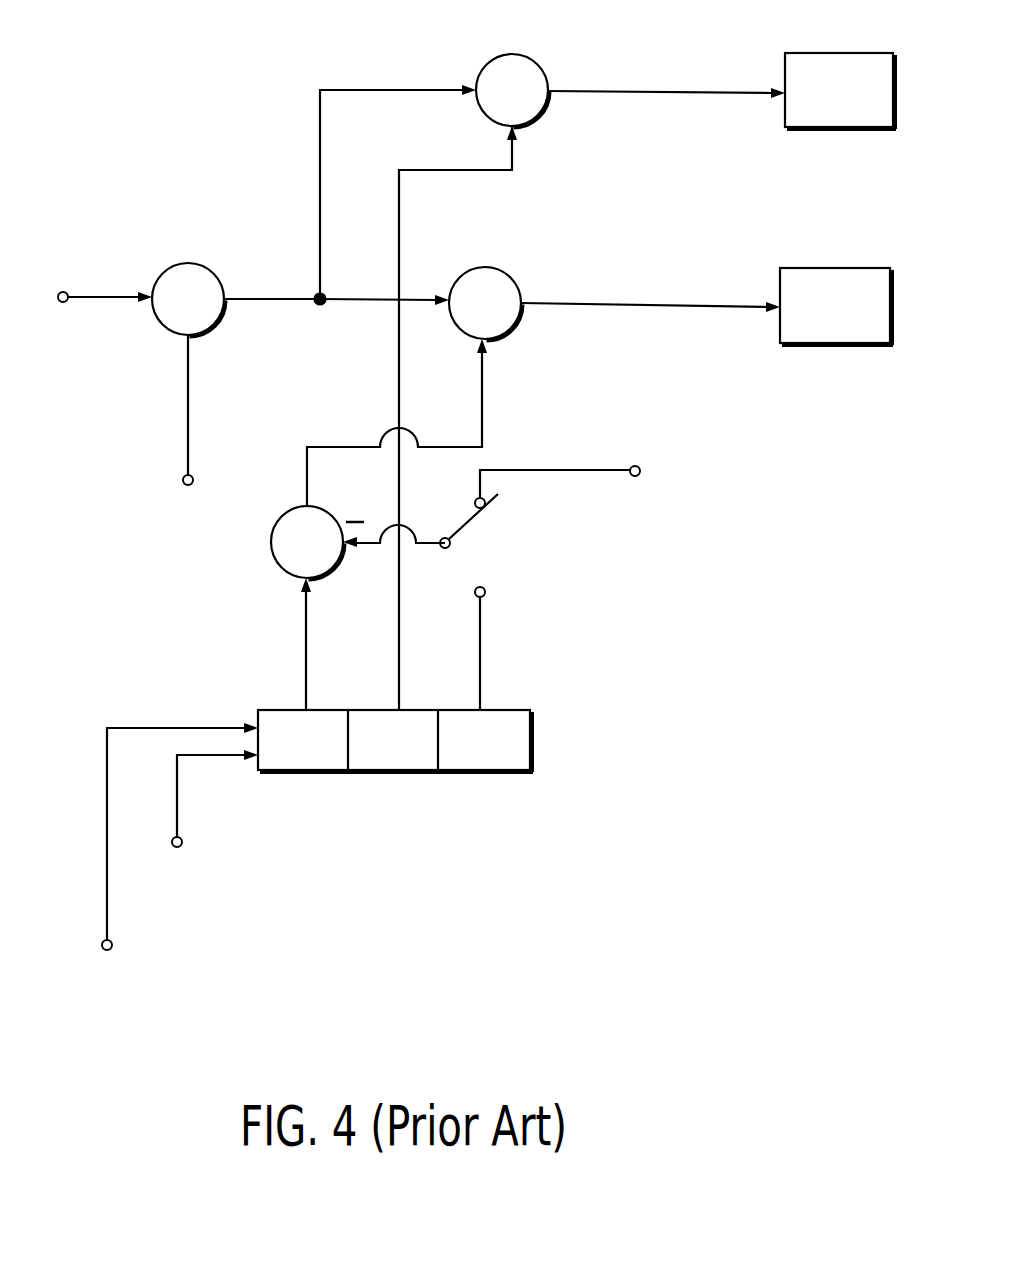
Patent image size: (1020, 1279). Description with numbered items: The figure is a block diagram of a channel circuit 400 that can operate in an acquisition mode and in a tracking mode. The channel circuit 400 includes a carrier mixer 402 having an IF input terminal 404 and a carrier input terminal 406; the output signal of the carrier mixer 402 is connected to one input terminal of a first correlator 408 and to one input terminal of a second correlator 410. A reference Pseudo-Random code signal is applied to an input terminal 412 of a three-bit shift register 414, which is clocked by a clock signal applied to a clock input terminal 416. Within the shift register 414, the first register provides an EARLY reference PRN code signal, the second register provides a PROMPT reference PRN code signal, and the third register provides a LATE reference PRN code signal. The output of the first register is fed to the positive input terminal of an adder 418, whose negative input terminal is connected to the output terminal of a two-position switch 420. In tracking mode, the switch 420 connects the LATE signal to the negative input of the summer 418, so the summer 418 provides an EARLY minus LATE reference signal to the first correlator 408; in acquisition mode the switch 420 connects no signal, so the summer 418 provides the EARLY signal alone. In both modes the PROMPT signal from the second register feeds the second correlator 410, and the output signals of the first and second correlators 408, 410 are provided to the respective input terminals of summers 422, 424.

The channel circuit 400 is at (470, 521).
The carrier mixer 402 is at (213, 268).
The IF input terminal 404 is at (68, 291).
The carrier input terminal 406 is at (182, 479).
The first correlator 408 is at (500, 268).
The second correlator 410 is at (513, 54).
The input terminal 412 is at (113, 945).
The 3-bit shift register 414 is at (534, 742).
The clock input terminal 416 is at (183, 841).
The adder 418 is at (298, 510).
The two-position switch 420 is at (468, 526).
The summer 422 is at (883, 301).
The summer 424 is at (887, 89).